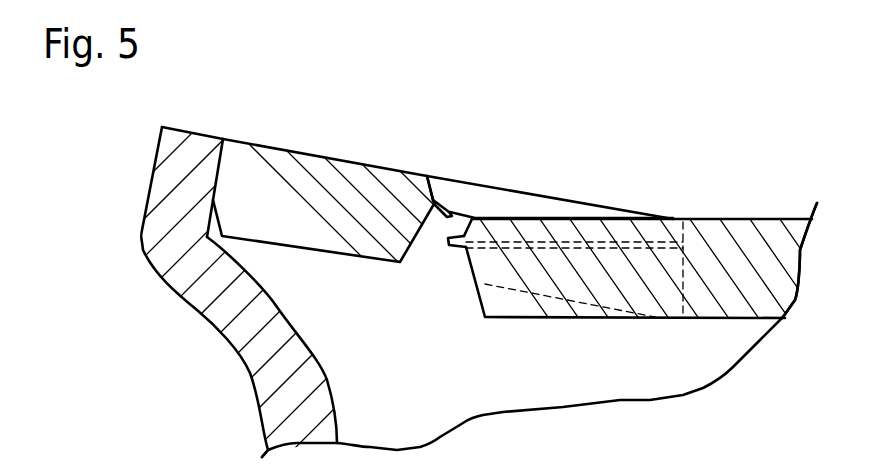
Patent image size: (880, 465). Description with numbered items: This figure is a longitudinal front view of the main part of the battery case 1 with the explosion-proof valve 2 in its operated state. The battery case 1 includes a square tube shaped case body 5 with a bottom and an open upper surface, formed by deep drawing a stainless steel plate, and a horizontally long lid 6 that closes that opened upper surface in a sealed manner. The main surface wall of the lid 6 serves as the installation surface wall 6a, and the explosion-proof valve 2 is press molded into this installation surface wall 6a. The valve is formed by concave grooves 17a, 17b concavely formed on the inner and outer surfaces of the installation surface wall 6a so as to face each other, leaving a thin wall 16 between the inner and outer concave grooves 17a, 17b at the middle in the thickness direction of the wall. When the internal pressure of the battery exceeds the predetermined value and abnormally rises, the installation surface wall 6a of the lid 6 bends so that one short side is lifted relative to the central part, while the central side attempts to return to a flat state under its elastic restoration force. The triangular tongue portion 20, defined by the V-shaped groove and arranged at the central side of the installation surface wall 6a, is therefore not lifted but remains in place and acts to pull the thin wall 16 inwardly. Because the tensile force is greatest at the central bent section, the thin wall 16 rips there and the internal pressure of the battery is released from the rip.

The battery case 1 is at (212, 321).
The explosion-proof valve 2 is at (477, 178).
The case body 5 is at (270, 410).
The lid 6 is at (343, 158).
The installation surface wall 6a is at (763, 219).
The thin wall 16 is at (447, 250).
The inner concave groove 17a is at (422, 240).
The outer concave groove 17b is at (443, 184).
The triangular tongue portion 20 is at (558, 230).